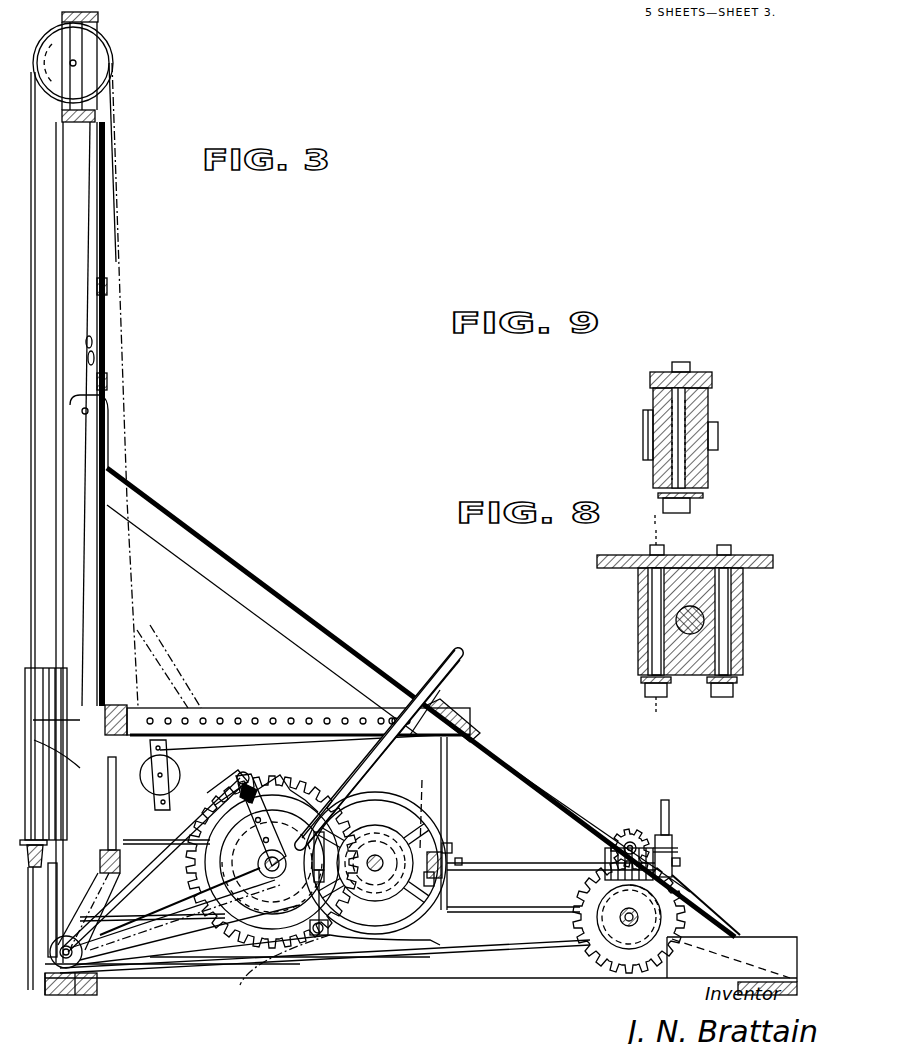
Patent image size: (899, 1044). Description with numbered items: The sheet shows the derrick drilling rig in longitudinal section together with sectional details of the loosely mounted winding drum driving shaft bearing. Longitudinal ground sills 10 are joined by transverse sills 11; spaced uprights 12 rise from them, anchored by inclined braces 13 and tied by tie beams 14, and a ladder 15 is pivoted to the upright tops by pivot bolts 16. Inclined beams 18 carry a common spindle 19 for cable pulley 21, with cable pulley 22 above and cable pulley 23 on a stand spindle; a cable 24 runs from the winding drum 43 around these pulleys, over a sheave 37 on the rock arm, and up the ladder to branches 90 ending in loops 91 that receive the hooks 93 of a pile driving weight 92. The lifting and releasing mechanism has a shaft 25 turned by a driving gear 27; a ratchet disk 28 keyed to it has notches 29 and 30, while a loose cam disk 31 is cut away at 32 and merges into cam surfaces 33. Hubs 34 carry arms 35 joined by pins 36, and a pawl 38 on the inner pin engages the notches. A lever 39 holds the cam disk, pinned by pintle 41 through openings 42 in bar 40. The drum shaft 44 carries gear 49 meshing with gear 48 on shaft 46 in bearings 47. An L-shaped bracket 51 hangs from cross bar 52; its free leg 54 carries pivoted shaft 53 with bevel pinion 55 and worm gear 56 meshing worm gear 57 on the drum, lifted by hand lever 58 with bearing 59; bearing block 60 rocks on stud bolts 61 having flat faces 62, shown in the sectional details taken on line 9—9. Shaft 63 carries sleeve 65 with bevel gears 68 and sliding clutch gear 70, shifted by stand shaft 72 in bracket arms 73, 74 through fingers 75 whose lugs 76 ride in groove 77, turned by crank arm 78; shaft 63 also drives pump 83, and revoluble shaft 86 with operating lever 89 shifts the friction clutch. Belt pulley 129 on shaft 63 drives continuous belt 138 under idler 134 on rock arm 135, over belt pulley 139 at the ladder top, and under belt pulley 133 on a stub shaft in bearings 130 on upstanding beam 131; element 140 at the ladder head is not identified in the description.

In FIG. 3, the longitudinal ground sills 10 is at (513, 978).
In FIG. 3, the transverse sills 11 is at (97, 982).
In FIG. 3, the uprights 12 is at (110, 445).
In FIG. 3, the inclined braces 13 is at (310, 618).
In FIG. 3, the tie beams 14 is at (123, 712).
In FIG. 3, the ladder 15 is at (98, 348).
In FIG. 3, the pivot bolts 16 is at (92, 405).
In FIG. 3, the inclined beams 18 is at (150, 915).
In FIG. 3, the common spindle 19 is at (70, 960).
In FIG. 3, the cable pulley 21 is at (78, 990).
In FIG. 3, the cable pulley 22 is at (100, 862).
In FIG. 3, the cable pulley 23 is at (58, 991).
In FIG. 3, the cable 24 is at (520, 948).
In FIG. 3, the shaft 25 is at (272, 882).
In FIG. 3, the driving gear 27 is at (316, 795).
In FIG. 3, the ratchet disk 28 is at (262, 905).
In FIG. 3, the notch 29 is at (255, 820).
In FIG. 3, the notch 30 is at (272, 887).
In FIG. 3, the cam disk 31 is at (305, 795).
In FIG. 3, the cut-away portion 32 is at (243, 902).
In FIG. 3, the cam surfaces 33 is at (282, 780).
In FIG. 3, the hubs 34 is at (278, 843).
In FIG. 3, the arms 35 is at (243, 772).
In FIG. 3, the spaced pins 36 is at (192, 815).
In FIG. 3, the sheave 37 is at (232, 785).
In FIG. 3, the pawl 38 is at (258, 783).
In FIG. 3, the lever 39 is at (160, 665).
In FIG. 3, the horizontally disposed bar 40 is at (328, 708).
In FIG. 3, the pintle 41 is at (425, 698).
In FIG. 3, the openings 42 is at (178, 715).
In FIG. 3, the winding drum 43 is at (690, 918).
In FIG. 3, the shaft 44 is at (636, 912).
In FIG. 3, the shaft 46 is at (668, 812).
In FIG. 3, the bearings 47 is at (518, 912).
In FIG. 3, the gear 48 is at (636, 832).
In FIG. 3, the gear 49 is at (622, 970).
In FIG. 3, the L-shaped bracket 51 is at (447, 800).
In FIG. 3, the cross bar 52 is at (465, 725).
In FIG. 3, the shaft 53 is at (515, 862).
In FIG. 9, the shaft 53 is at (718, 435).
In FIG. 8, the shaft 53 is at (690, 634).
In FIG. 3, the free leg 54 is at (450, 878).
In FIG. 3, the driving pinion 55 is at (432, 852).
In FIG. 3, the worm gear 56 is at (612, 848).
In FIG. 9, the worm gear 56 is at (643, 422).
In FIG. 3, the worm gear 57 is at (665, 905).
In FIG. 3, the hand lever 58 is at (672, 850).
In FIG. 9, the hand lever 58 is at (712, 374).
In FIG. 8, the hand lever 58 is at (757, 555).
In FIG. 3, the bearing 59 is at (462, 862).
In FIG. 9, the bearing 59 is at (712, 413).
In FIG. 8, the bearing 59 is at (743, 620).
In FIG. 3, the bearing block 60 is at (452, 845).
In FIG. 9, the bearing block 60 is at (708, 472).
In FIG. 8, the bearing block 60 is at (648, 610).
In FIG. 9, the stud bolts 61 is at (690, 512).
In FIG. 8, the stud bolts 61 is at (731, 598).
In FIG. 9, the flat faces 62 is at (685, 467).
In FIG. 8, the flat faces 62 is at (657, 655).
In FIG. 3, the shaft 63 is at (383, 863).
In FIG. 3, the sleeve 65 is at (380, 855).
In FIG. 3, the bevel gears 68 is at (400, 830).
In FIG. 3, the clutch gear 70 is at (366, 863).
In FIG. 3, the stand shaft 72 is at (328, 935).
In FIG. 3, the bracket arm 73 is at (330, 795).
In FIG. 3, the bracket arm 74 is at (318, 935).
In FIG. 3, the parallel fingers 75 is at (340, 790).
In FIG. 3, the lugs 76 is at (385, 800).
In FIG. 3, the groove 77 is at (430, 807).
In FIG. 3, the crank arm 78 is at (320, 930).
In FIG. 3, the pump 83 is at (140, 935).
In FIG. 3, the revoluble shaft 86 is at (150, 840).
In FIG. 3, the operating lever 89 is at (116, 800).
In FIG. 3, the branches 90 is at (36, 560).
In FIG. 3, the loops 91 is at (69, 718).
In FIG. 3, the weight 92 is at (45, 668).
In FIG. 3, the hooks 93 is at (68, 762).
In FIG. 3, the belt pulley 129 is at (405, 950).
In FIG. 3, the bearings 130 is at (80, 960).
In FIG. 3, the upstanding beam 131 is at (95, 860).
In FIG. 3, the belt pulley 133 is at (130, 968).
In FIG. 3, the idler 134 is at (150, 770).
In FIG. 3, the rock arm 135 is at (243, 735).
In FIG. 3, the continuous belt 138 is at (128, 468).
In FIG. 3, the belt pulley 139 is at (108, 70).
In FIG. 3, the pulley 140 is at (95, 60).
In FIG. 9, the section line 9 is at (650, 523).
In FIG. 8, the section line 9 is at (654, 625).